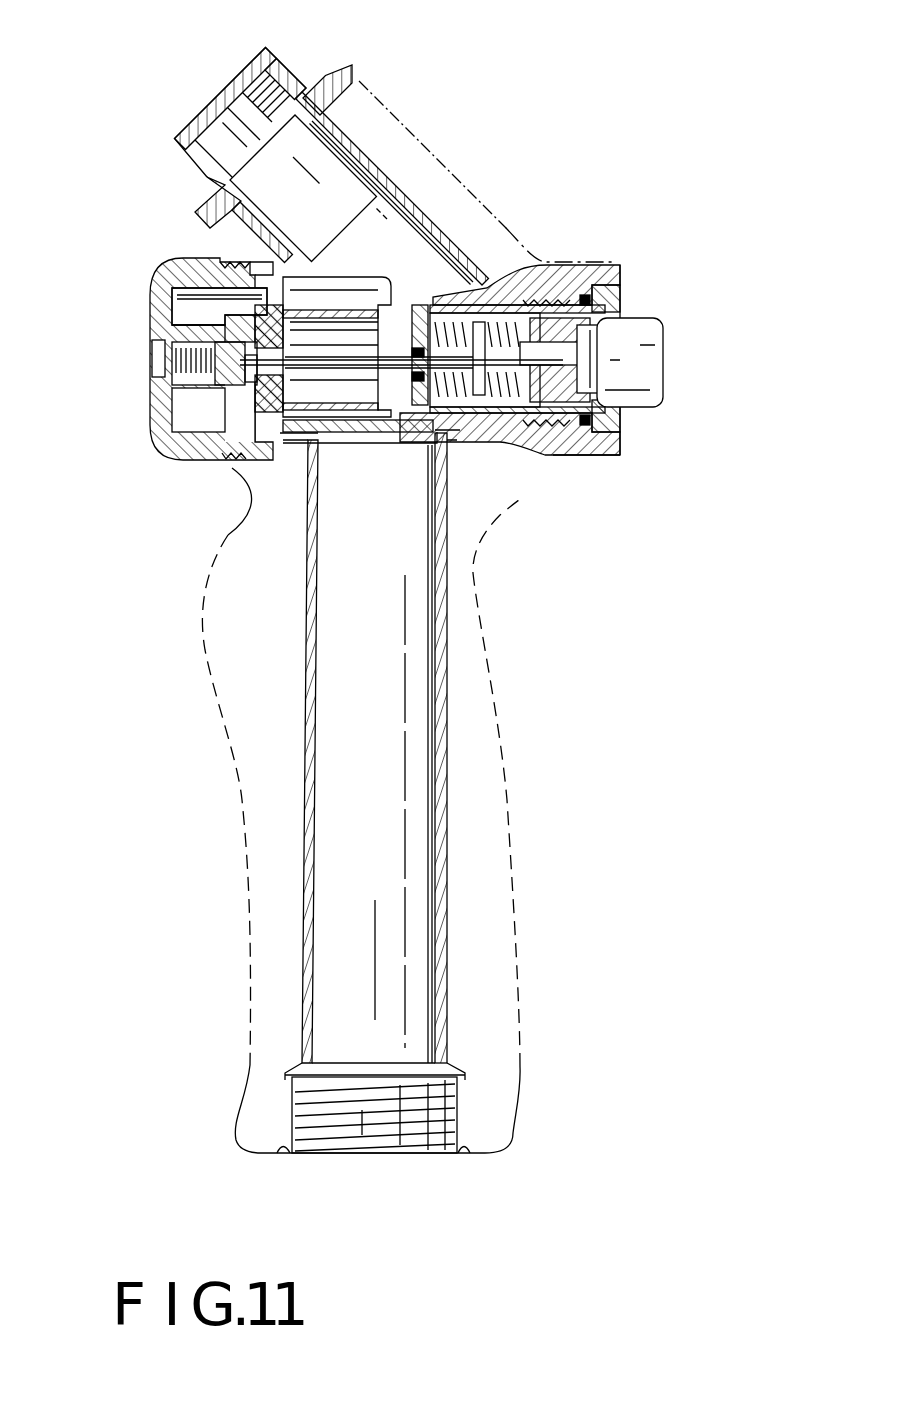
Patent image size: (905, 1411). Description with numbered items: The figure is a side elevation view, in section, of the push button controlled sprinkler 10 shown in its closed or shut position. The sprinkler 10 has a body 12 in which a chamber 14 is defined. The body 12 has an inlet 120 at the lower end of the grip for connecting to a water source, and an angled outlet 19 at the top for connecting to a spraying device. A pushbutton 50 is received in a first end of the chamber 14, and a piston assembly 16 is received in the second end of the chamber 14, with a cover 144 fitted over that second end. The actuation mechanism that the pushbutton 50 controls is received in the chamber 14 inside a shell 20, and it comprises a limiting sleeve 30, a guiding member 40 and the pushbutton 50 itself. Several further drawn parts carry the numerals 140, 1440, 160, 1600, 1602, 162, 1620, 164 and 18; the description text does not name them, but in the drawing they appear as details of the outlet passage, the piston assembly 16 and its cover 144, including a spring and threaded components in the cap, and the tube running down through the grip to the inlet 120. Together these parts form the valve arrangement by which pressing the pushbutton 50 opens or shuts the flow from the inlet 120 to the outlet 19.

The sprinkler 10 is at (394, 810).
The body 12 is at (243, 830).
The inlet 120 is at (342, 1143).
The chamber 14 is at (521, 282).
The gas passage bore 140 is at (343, 328).
The cover 144 is at (158, 290).
The recess in end cap 1440 is at (160, 388).
The piston assembly 16 is at (171, 368).
The inner sleeve of adjusting cap 160 is at (258, 410).
The upper chamber of adjusting cap 1600 is at (165, 288).
The threaded collar 1602 is at (228, 262).
The adjusting nut 162 is at (197, 352).
The adjusting pin 1620 is at (178, 308).
The compression spring 164 is at (176, 362).
The gas tube / sleeve 18 is at (343, 378).
The outlet 19 is at (245, 110).
The shell 20 is at (443, 415).
The limiting sleeve 30 is at (513, 467).
The guiding member 40 is at (650, 298).
The pushbutton 50 is at (665, 360).